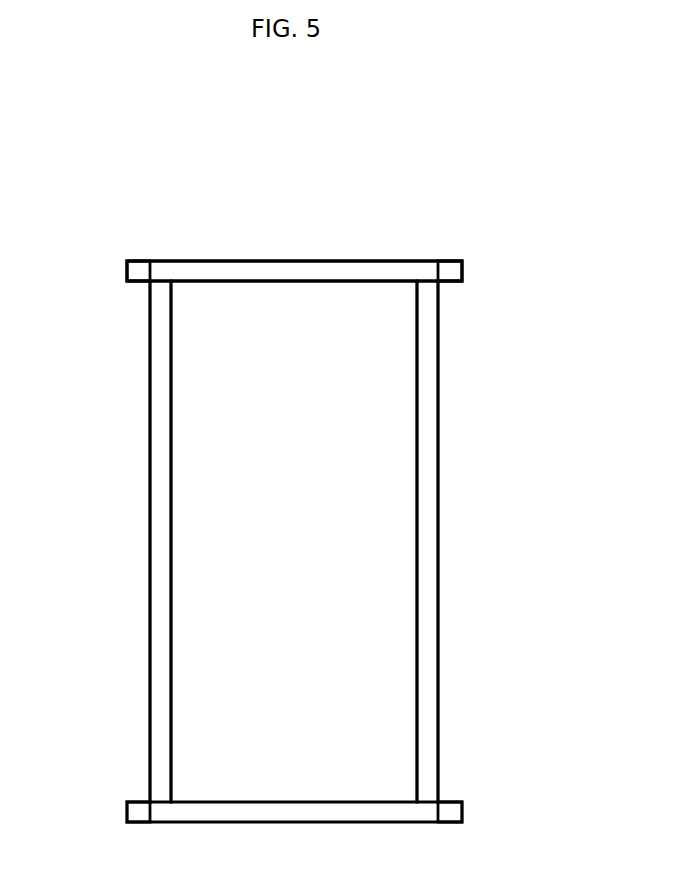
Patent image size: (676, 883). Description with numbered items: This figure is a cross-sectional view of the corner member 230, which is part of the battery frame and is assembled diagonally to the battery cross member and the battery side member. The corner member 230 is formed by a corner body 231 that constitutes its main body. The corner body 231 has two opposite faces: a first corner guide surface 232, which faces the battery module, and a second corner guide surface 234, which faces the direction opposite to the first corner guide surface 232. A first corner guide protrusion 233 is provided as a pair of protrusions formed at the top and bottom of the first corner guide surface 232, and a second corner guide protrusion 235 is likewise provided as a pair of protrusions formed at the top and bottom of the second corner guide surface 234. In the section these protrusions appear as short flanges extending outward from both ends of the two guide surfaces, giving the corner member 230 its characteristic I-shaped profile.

The corner member 230 is at (43, 154).
The corner body 231 is at (345, 265).
The first corner guide surface 232 is at (438, 482).
The first corner guide protrusion 233 is at (462, 270).
The second corner guide surface 234 is at (150, 551).
The second corner guide protrusion 235 is at (127, 265).